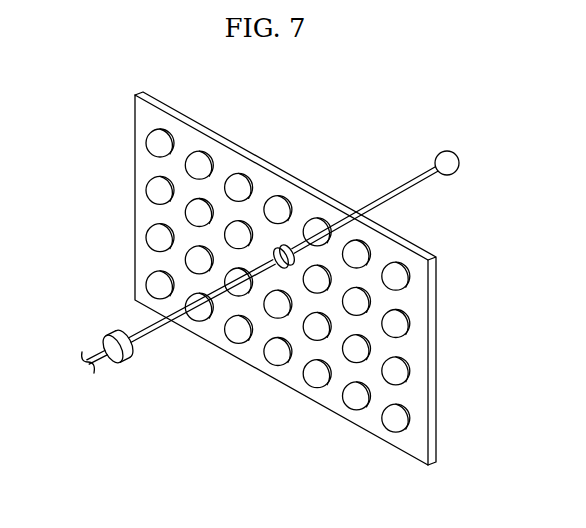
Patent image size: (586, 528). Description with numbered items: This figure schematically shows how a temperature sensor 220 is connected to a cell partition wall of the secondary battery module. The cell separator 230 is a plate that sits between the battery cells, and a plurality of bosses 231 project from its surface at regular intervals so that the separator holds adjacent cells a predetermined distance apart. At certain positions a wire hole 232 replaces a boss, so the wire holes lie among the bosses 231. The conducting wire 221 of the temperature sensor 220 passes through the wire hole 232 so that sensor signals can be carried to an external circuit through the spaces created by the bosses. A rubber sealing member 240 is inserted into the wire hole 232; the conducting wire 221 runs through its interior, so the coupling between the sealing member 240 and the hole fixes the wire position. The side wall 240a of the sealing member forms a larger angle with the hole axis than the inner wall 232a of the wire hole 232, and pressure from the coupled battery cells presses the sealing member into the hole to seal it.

The temperature sensor 220 is at (448, 160).
The conducting wire 221 is at (162, 326).
The cell separator 230 is at (248, 124).
The boss 231 is at (161, 141).
The wire hole 232 is at (324, 199).
The inner wall of the wire hole 232a is at (285, 248).
The sealing member 240 is at (87, 324).
The side wall of the sealing member 240a is at (120, 333).